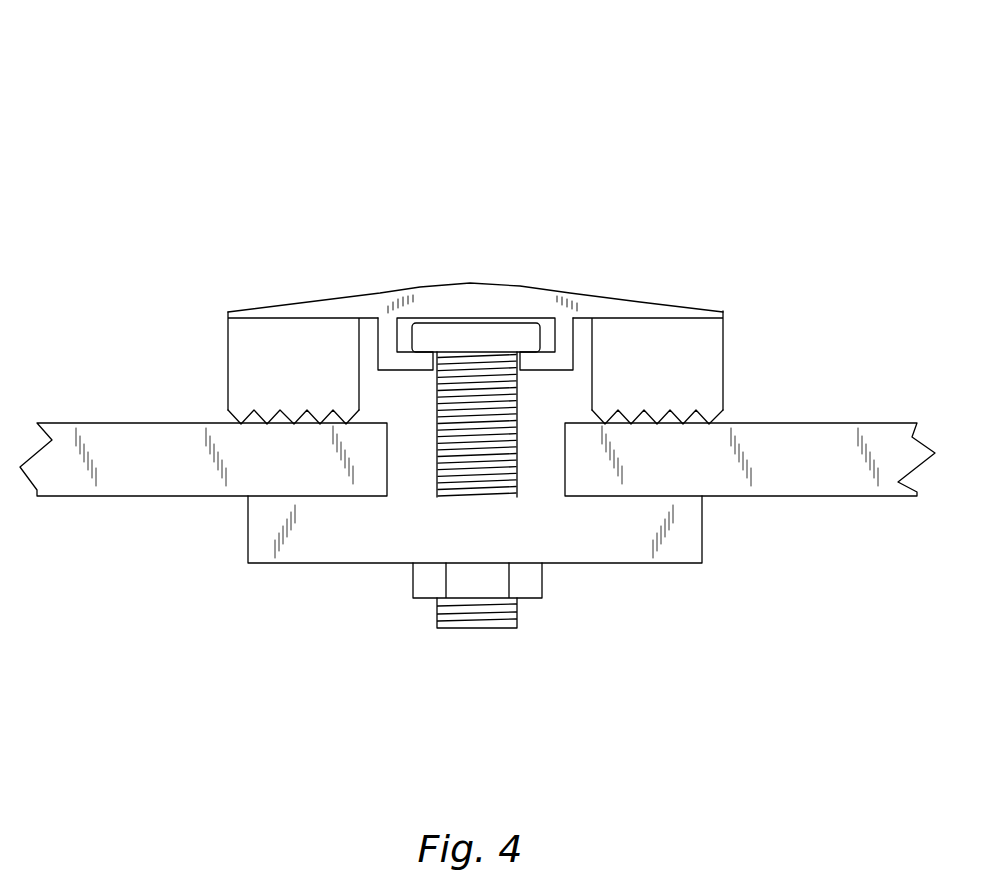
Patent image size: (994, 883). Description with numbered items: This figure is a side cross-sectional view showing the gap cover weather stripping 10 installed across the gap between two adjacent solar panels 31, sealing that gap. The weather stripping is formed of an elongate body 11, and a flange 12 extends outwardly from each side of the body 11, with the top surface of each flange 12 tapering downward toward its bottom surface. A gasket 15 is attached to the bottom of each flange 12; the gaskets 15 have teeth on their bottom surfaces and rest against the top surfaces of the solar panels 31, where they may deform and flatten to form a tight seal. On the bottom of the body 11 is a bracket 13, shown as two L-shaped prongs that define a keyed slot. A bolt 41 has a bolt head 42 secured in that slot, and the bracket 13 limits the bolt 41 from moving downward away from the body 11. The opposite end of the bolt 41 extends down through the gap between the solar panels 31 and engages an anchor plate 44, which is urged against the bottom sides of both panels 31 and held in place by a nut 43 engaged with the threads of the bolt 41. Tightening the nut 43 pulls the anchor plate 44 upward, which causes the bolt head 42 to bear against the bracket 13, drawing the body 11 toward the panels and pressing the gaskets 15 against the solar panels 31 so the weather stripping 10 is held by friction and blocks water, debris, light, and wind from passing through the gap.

The gap cover weather stripping 10 is at (477, 380).
The elongate body 11 is at (462, 295).
The flange 12 is at (309, 300).
The bracket 13 is at (378, 350).
The gasket 15 is at (228, 378).
The solar panel 31 is at (128, 497).
The bolt 41 is at (452, 628).
The bolt head 42 is at (505, 338).
The nut 43 is at (412, 578).
The anchor plate 44 is at (622, 567).